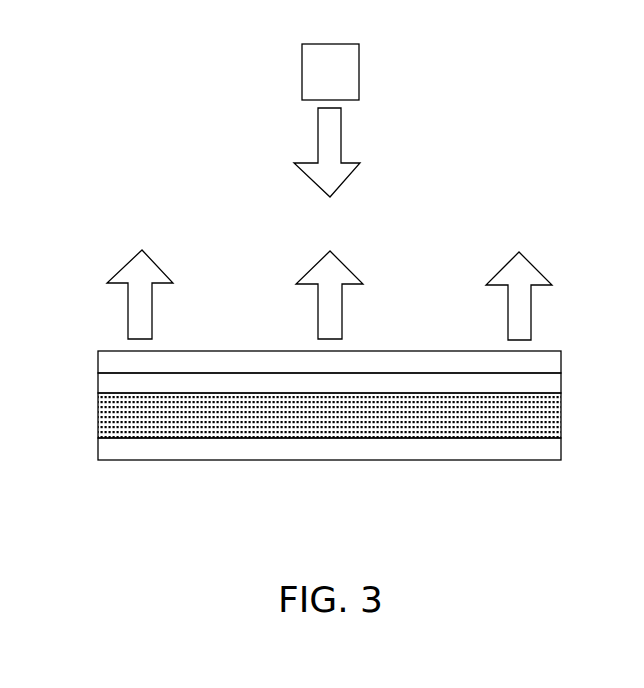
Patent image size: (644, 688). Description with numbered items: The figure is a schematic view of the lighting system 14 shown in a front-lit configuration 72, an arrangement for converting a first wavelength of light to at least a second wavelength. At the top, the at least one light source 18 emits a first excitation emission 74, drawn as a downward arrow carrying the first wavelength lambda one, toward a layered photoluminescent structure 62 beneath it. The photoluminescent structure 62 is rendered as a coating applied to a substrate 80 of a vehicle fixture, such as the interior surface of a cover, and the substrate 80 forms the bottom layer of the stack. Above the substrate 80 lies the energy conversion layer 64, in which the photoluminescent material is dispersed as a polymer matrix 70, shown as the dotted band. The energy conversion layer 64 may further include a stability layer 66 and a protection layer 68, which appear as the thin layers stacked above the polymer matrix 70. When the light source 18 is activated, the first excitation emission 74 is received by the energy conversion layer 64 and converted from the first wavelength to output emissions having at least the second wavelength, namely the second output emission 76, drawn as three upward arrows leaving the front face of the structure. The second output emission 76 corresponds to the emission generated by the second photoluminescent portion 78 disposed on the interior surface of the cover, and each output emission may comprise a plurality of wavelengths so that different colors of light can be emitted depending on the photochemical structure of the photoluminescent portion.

The lighting system 14 is at (431, 107).
The front-lit configuration 72 is at (431, 107).
The light source 18 is at (342, 78).
The first excitation emission 74 is at (343, 147).
The second output emission 76 is at (133, 315).
The second photoluminescent portion 78 is at (347, 260).
The photoluminescent structure 62 is at (336, 383).
The polymer matrix 70 is at (328, 411).
The protection layer 68 is at (103, 360).
The stability layer 66 is at (103, 381).
The energy conversion layer 64 is at (102, 420).
The substrate 80 is at (548, 447).